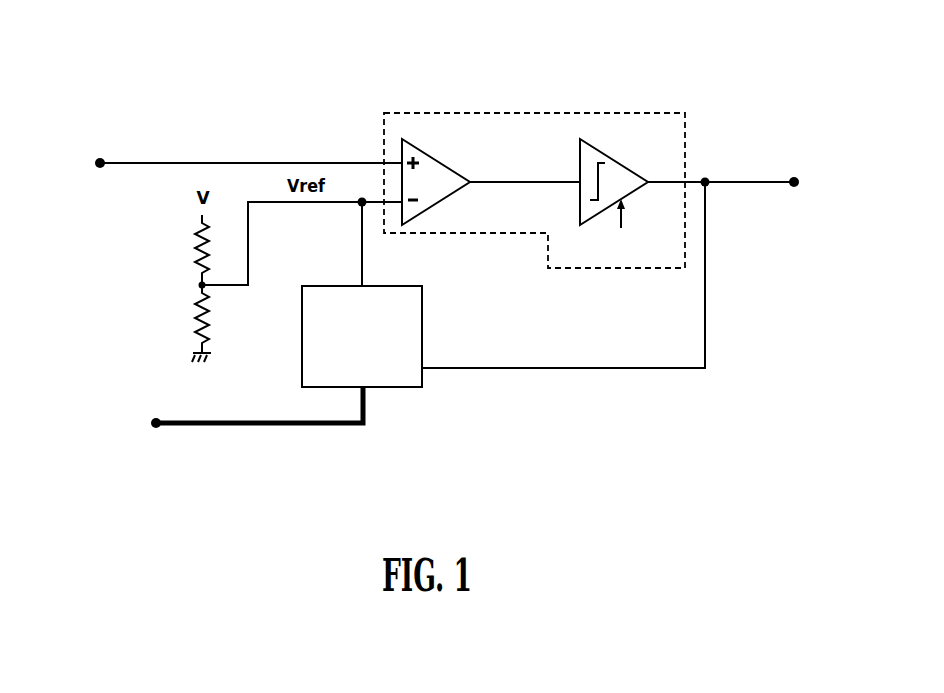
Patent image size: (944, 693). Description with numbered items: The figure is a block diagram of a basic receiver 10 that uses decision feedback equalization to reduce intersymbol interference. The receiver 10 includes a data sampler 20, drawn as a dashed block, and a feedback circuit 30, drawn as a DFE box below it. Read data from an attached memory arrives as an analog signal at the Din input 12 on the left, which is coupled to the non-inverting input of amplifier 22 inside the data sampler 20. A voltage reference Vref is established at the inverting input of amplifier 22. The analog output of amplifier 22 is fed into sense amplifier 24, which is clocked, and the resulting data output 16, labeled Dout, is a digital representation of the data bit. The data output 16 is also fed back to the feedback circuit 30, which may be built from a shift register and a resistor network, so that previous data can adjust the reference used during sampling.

The receiver 10 is at (318, 33).
The Din input 12 is at (163, 163).
The data output 16 is at (738, 182).
The data sampler 20 is at (503, 113).
The amplifier 22 is at (442, 203).
The sense amplifier 24 is at (597, 148).
The feedback circuit 30 is at (390, 387).